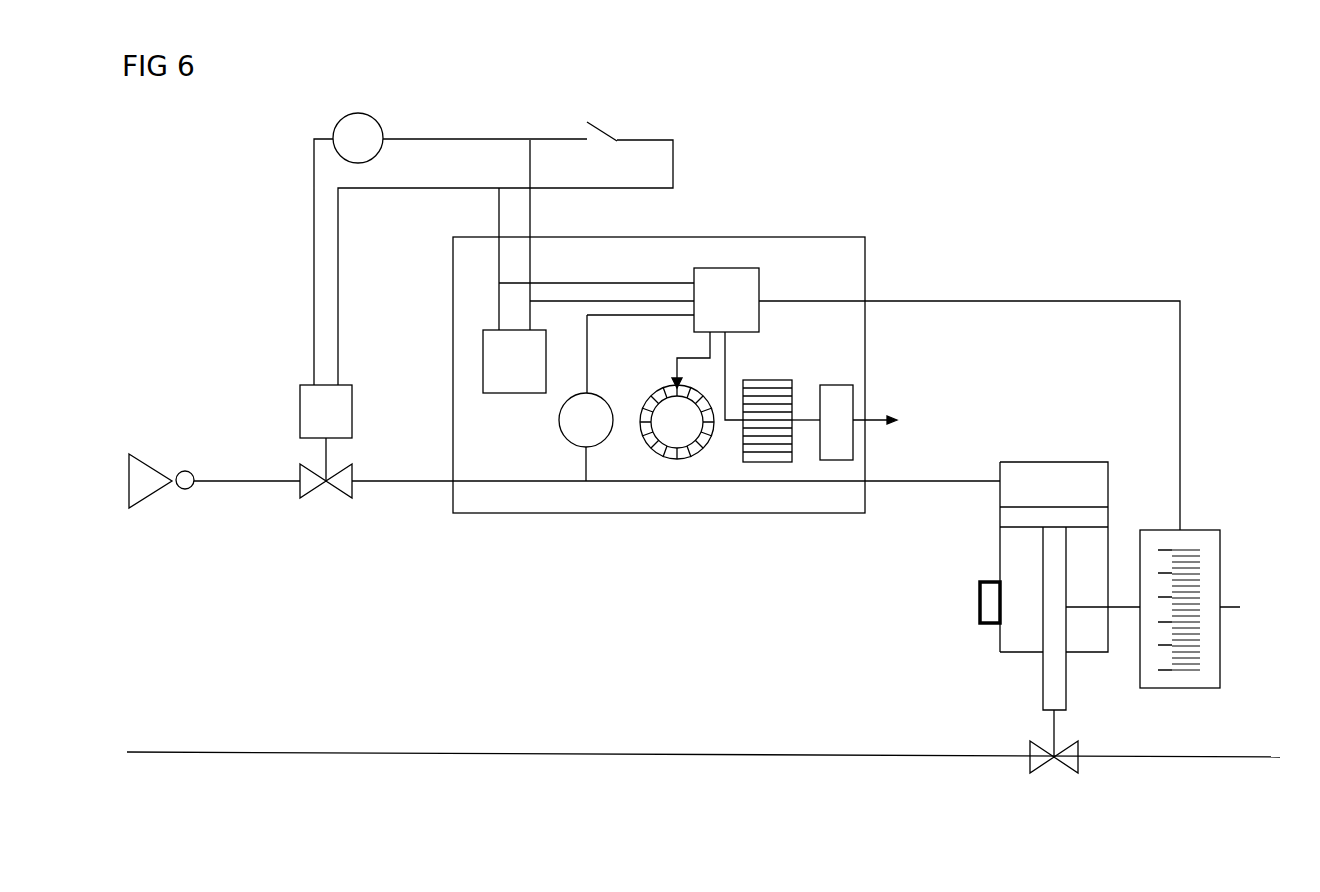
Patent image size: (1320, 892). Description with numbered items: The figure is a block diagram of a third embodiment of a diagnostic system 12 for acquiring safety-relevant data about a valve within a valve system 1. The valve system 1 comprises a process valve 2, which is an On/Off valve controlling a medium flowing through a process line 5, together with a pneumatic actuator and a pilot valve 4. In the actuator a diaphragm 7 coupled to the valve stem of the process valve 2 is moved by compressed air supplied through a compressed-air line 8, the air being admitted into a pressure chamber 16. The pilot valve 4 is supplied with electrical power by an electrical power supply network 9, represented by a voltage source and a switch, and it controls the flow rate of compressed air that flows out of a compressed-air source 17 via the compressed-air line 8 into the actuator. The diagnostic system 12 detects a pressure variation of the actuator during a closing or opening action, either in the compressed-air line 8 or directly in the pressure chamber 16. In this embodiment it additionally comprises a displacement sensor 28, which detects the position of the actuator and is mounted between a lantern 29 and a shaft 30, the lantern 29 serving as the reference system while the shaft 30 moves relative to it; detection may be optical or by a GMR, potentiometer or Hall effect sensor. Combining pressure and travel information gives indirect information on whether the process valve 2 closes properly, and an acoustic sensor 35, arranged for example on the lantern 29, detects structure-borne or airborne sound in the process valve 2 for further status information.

The valve system 1 is at (1014, 158).
The process valve 2 is at (1040, 770).
The pilot valve 4 is at (314, 492).
The process line 5 is at (571, 752).
The diaphragm 7 is at (1100, 517).
The compressed-air line 8 is at (924, 488).
The electrical power supply network 9 is at (533, 129).
The diagnostic system 12 is at (877, 284).
The pressure chamber 16 is at (1100, 486).
The compressed-air source 17 is at (165, 492).
The displacement sensor 28 is at (1164, 609).
The lantern 29 is at (997, 656).
The shaft 30 is at (1068, 683).
The acoustic sensor 35 is at (980, 612).